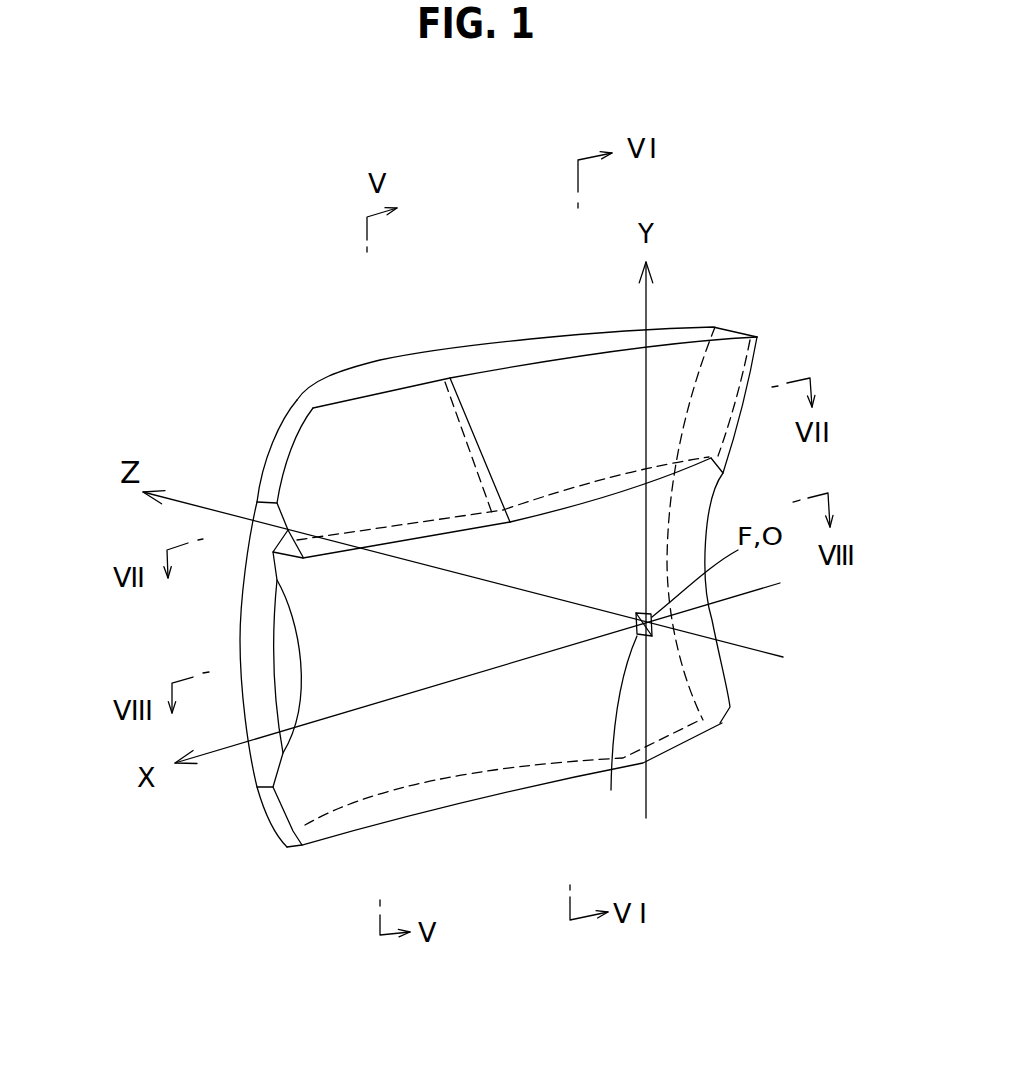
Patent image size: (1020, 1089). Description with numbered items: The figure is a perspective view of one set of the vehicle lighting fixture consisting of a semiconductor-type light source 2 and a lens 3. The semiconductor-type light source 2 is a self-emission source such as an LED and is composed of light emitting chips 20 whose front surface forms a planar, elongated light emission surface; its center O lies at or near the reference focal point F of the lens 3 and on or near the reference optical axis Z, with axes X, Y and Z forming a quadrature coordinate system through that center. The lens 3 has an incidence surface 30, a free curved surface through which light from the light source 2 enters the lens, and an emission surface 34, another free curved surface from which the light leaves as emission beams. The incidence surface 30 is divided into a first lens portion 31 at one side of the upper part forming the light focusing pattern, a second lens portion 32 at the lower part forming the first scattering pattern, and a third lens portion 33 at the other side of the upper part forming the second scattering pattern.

The semiconductor-type light source 2 is at (653, 642).
The lens 3 is at (457, 317).
The light emitting chip 20 is at (614, 730).
The incidence surface 30 is at (509, 555).
The first lens portion 31 is at (330, 435).
The second lens portion 32 is at (505, 737).
The third lens portion 33 is at (530, 380).
The emission surface 34 is at (240, 613).